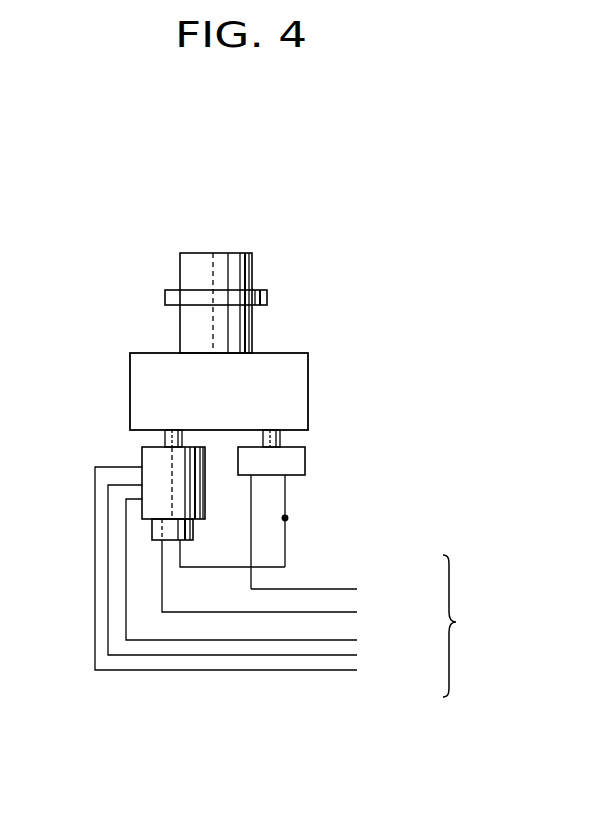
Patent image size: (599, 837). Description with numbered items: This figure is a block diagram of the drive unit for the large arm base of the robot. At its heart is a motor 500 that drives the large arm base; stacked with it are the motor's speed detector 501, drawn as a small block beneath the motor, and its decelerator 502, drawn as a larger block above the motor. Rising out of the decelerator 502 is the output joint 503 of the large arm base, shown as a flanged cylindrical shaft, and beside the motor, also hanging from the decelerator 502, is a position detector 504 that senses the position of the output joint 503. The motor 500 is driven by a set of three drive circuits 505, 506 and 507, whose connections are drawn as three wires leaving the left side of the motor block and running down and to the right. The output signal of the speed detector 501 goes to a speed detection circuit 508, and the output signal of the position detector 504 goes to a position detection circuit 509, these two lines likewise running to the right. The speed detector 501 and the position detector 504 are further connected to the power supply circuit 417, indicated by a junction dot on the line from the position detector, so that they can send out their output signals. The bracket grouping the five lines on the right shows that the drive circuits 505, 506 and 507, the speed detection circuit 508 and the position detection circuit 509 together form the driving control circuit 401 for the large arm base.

The driving control circuit 401 is at (481, 626).
The power supply circuit 417 is at (285, 518).
The motor 500 is at (142, 452).
The speed detector 501 is at (152, 536).
The decelerator 502 is at (308, 378).
The output joint 503 is at (222, 255).
The position detector 504 is at (305, 462).
The drive circuit 505 is at (357, 669).
The drive circuit 506 is at (357, 654).
The drive circuit 507 is at (357, 639).
The speed detection circuit 508 is at (357, 611).
The position detection circuit 509 is at (357, 588).